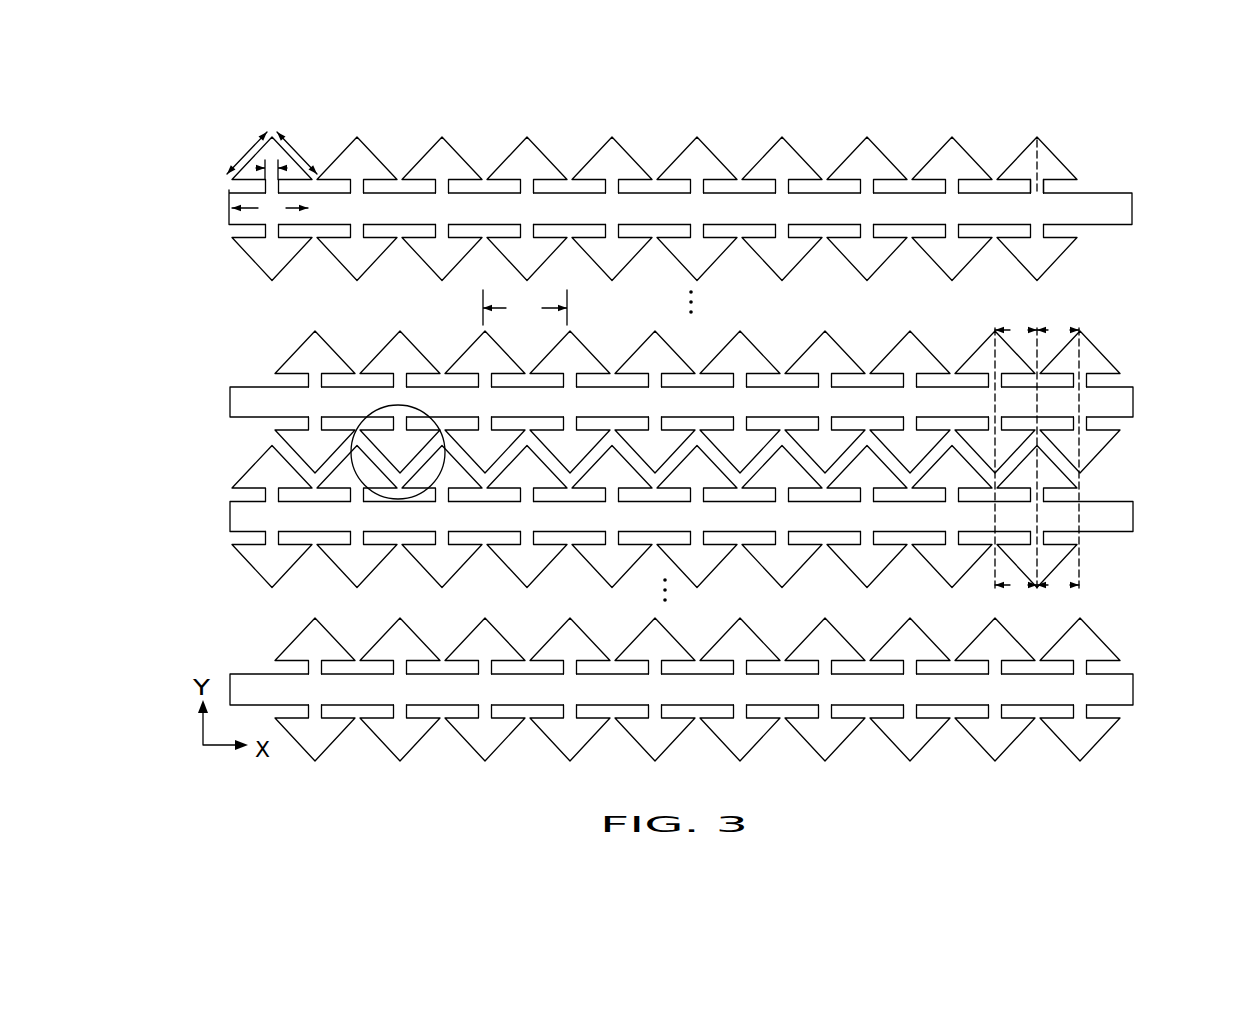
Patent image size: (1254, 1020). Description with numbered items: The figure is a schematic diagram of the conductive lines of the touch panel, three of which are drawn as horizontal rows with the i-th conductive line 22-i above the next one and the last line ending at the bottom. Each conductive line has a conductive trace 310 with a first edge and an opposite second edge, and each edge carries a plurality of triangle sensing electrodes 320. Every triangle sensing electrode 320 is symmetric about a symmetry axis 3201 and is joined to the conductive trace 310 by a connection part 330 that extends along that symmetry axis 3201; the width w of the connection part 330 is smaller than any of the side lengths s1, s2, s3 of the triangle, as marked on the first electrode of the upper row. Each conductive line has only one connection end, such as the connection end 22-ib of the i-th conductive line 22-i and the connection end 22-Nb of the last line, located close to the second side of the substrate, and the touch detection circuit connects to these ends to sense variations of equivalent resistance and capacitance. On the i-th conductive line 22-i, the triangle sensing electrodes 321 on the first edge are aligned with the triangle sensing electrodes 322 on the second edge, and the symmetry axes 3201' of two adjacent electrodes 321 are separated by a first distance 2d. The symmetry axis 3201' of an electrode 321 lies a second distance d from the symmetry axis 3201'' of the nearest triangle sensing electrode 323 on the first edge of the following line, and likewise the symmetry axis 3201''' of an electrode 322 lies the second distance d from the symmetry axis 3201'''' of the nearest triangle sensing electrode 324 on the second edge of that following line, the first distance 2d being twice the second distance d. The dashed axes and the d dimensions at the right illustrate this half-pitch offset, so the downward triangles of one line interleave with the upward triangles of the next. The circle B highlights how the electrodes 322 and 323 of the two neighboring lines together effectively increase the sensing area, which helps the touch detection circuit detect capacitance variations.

The conductive trace 310 is at (616, 408).
The triangle sensing electrode 320 is at (1057, 158).
The triangle sensing electrodes at the first edge of the i-th conductive line 321 is at (293, 353).
The triangle sensing electrodes at the second edge of the i-th conductive line 322 is at (287, 442).
The triangle sensing electrodes at the first edge of the (i+1)-th conductive line 323 is at (247, 472).
The triangle sensing electrodes at the second edge of the (i+1)-th conductive line 324 is at (246, 562).
The connection part 330 is at (1045, 188).
The symmetry axis 3201 is at (1078, 144).
The symmetry axis of triangle sensing electrode 321 3201' is at (1116, 456).
The symmetry axis of triangle sensing electrode 323 3201'' is at (1142, 479).
The symmetry axis of triangle sensing electrode 322 3201''' is at (1142, 459).
The symmetry axis of triangle sensing electrode 324 3201'''' is at (1145, 559).
The i-th conductive line 22-i is at (687, 456).
The connection end of the i-th conductive line 22-ib is at (247, 387).
The connection end of the N-th conductive line 22-Nb is at (248, 674).
The circle B is at (399, 499).
The side length s1 is at (270, 208).
The side length s2 is at (243, 150).
The side length s3 is at (298, 150).
The width of the connection part w is at (271, 167).
The second distance d is at (1037, 457).
The first distance 2d is at (525, 307).